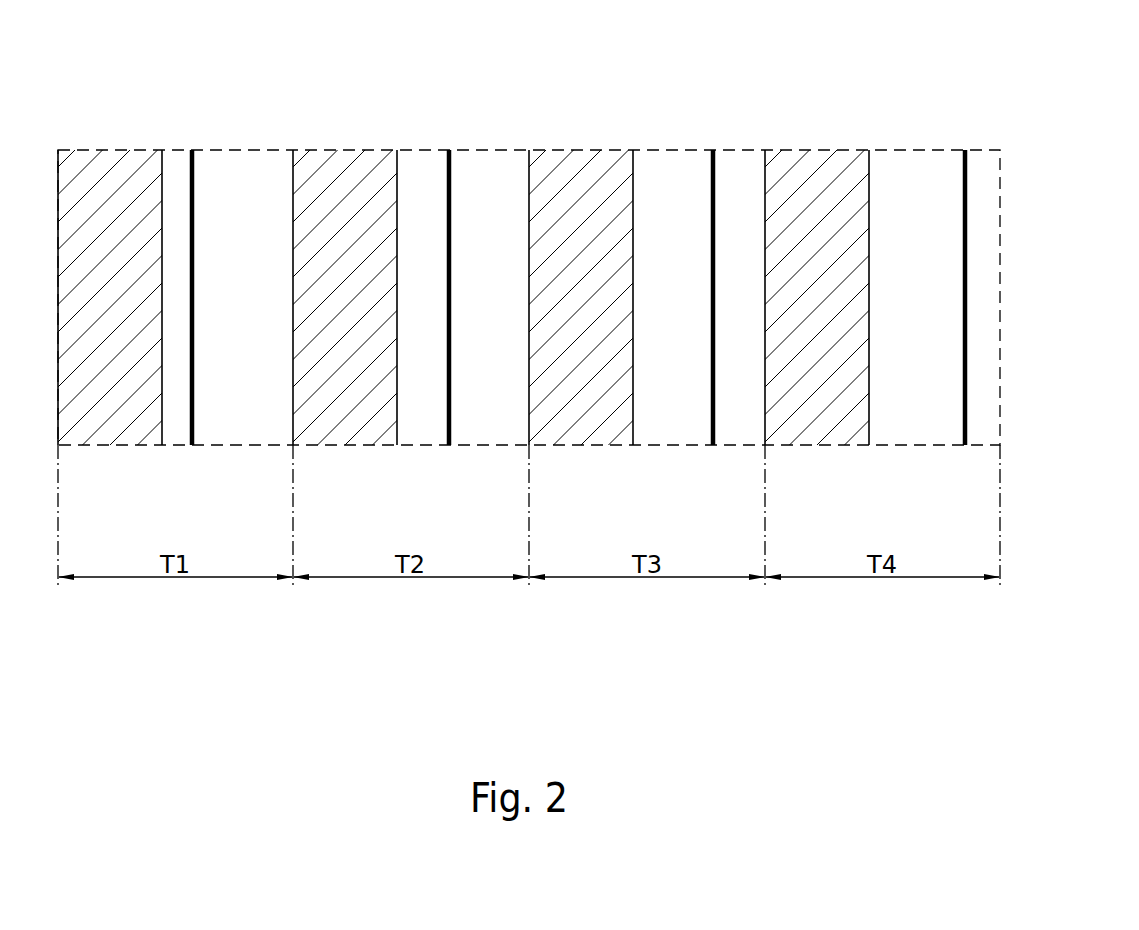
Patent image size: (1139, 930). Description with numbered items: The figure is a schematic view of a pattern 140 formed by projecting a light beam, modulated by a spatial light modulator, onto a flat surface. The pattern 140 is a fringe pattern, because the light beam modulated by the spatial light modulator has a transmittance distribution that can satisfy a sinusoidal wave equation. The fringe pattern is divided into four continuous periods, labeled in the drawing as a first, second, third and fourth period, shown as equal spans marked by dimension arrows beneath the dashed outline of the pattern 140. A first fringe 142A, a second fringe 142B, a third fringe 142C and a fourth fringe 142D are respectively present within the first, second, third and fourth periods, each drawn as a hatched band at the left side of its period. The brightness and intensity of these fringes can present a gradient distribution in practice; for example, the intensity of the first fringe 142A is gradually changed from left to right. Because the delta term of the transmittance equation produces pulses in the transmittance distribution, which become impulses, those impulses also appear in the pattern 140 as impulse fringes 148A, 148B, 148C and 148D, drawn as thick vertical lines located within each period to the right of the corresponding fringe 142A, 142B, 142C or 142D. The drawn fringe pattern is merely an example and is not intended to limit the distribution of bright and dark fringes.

The pattern 140 is at (1016, 230).
The first fringe 142A is at (293, 78).
The second fringe 142B is at (293, 78).
The third fringe 142C is at (529, 78).
The fourth fringe 142D is at (1000, 78).
The impulse fringe 148A is at (195, 187).
The impulse fringe 148B is at (452, 187).
The impulse fringe 148C is at (716, 187).
The impulse fringe 148D is at (968, 187).